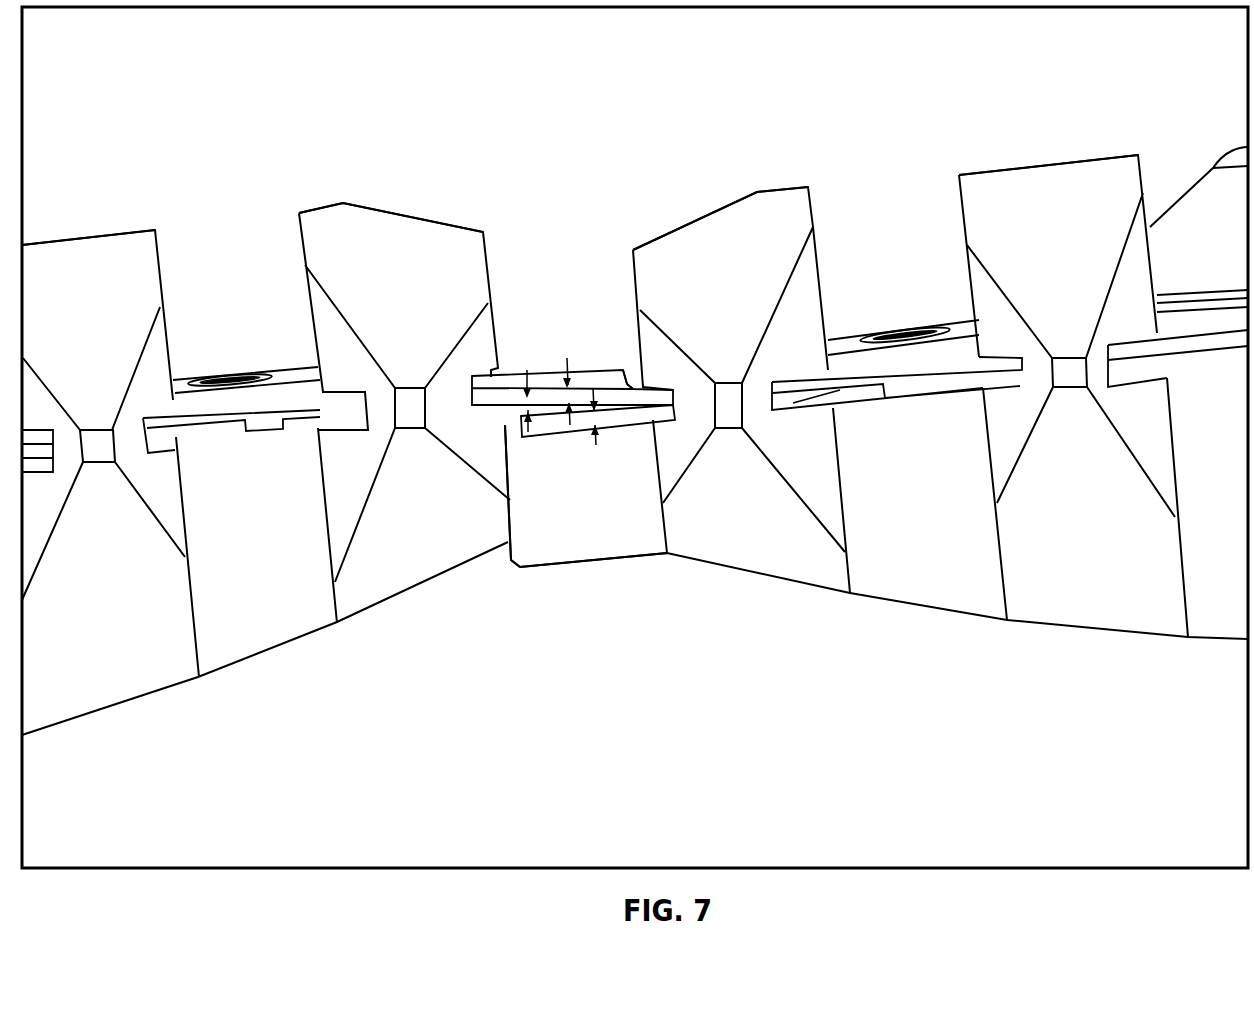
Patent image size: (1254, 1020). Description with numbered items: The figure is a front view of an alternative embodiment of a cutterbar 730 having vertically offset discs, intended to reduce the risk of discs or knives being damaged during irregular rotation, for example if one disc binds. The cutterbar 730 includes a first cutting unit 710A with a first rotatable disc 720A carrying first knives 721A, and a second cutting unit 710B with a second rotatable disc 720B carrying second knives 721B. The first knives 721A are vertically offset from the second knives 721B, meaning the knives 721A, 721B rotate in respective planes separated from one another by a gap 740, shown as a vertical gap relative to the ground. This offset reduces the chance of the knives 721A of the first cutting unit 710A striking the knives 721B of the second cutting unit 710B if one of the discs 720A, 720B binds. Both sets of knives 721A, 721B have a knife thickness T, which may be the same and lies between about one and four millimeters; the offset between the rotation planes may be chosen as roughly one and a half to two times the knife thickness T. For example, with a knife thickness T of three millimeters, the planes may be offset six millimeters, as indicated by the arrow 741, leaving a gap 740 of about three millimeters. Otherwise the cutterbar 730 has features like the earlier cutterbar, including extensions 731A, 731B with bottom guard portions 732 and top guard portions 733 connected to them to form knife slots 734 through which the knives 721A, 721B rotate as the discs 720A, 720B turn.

The cutterbar 730 is at (560, 108).
The first cutting unit 710A is at (1127, 108).
The second cutting unit 710B is at (205, 187).
The extension 731A is at (780, 186).
The extension 731B is at (80, 236).
The bottom guard portion 732 is at (115, 438).
The top guard portion 733 is at (150, 250).
The knife slot 734 is at (350, 434).
The first rotatable disc 720A is at (870, 340).
The second rotatable disc 720B is at (290, 372).
The first knives 721A is at (543, 424).
The second knives 721B is at (547, 388).
The gap 740 is at (620, 394).
The arrow 741 is at (523, 413).
The knife thickness T is at (580, 368).